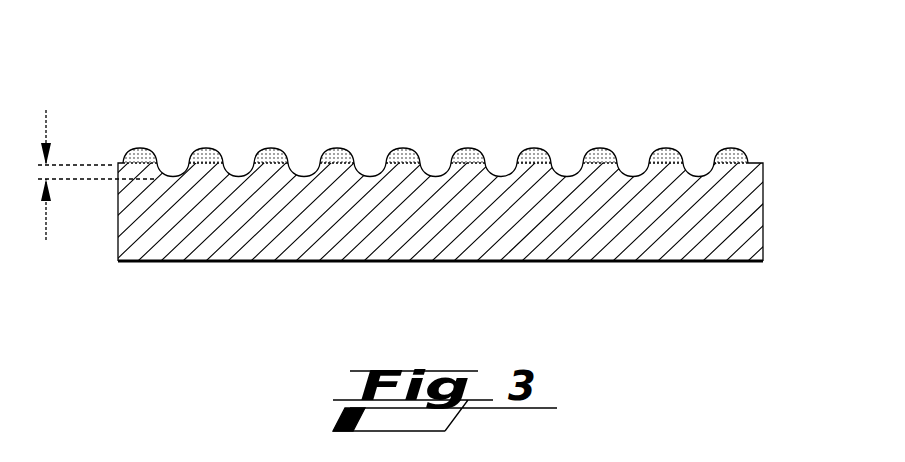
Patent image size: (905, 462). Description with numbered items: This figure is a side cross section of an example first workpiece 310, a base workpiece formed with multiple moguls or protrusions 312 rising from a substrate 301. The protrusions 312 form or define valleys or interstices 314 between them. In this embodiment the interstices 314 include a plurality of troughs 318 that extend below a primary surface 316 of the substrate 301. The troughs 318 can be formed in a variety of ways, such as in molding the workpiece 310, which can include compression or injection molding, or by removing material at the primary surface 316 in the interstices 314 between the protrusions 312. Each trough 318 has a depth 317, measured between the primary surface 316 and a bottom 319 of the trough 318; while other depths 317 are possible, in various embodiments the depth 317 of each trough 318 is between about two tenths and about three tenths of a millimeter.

The workpiece 310 is at (233, 288).
The substrate 301 is at (655, 261).
The protrusions 312 is at (276, 145).
The interstices 314 is at (567, 162).
The primary surface 316 is at (117, 158).
The depth 317 is at (47, 212).
The troughs 318 is at (495, 165).
The bottom 319 is at (303, 170).